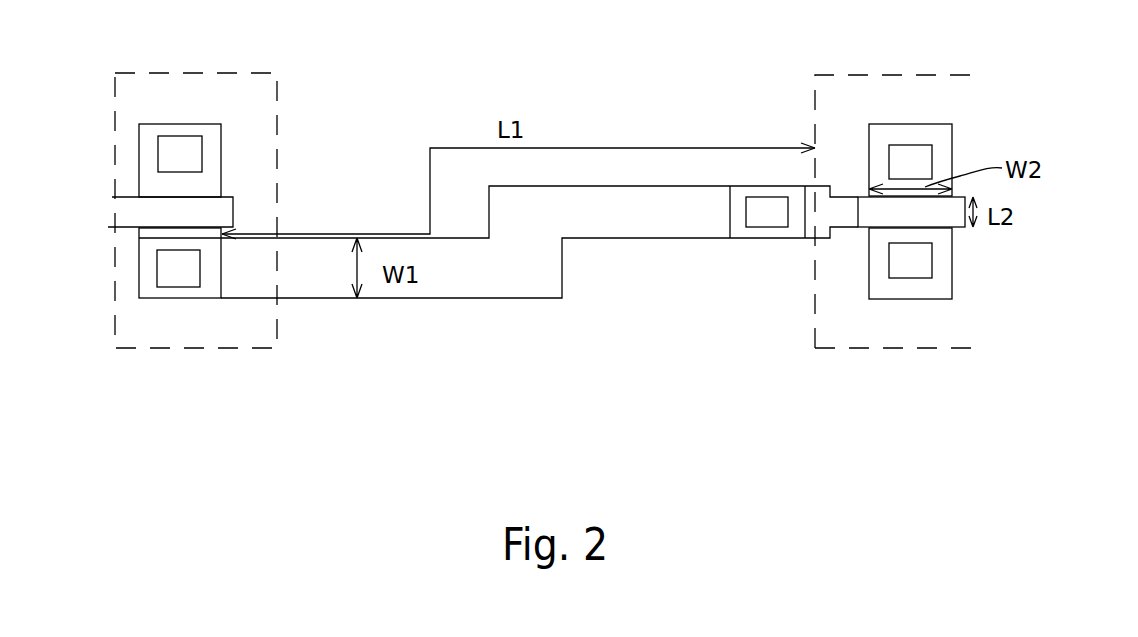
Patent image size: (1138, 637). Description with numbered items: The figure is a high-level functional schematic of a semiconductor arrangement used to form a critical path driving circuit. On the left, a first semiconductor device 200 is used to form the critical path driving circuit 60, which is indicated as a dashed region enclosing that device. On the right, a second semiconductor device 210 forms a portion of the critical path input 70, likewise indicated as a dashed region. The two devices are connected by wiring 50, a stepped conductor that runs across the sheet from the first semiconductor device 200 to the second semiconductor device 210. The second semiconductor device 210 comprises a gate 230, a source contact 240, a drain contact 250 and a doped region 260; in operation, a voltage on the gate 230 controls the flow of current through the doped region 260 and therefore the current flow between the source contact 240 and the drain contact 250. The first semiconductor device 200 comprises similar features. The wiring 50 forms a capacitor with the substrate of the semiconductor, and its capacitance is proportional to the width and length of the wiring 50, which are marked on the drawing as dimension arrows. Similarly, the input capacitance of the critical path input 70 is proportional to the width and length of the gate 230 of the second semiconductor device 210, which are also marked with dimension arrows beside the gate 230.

The wiring 50 is at (437, 298).
The critical path driving circuit 60 is at (278, 136).
The critical path input 70 is at (909, 75).
The first semiconductor device 200 is at (180, 124).
The second semiconductor device 210 is at (937, 122).
The gate 230 is at (965, 209).
The source contact 240 is at (932, 167).
The drain contact 250 is at (932, 260).
The doped region 260 is at (952, 299).